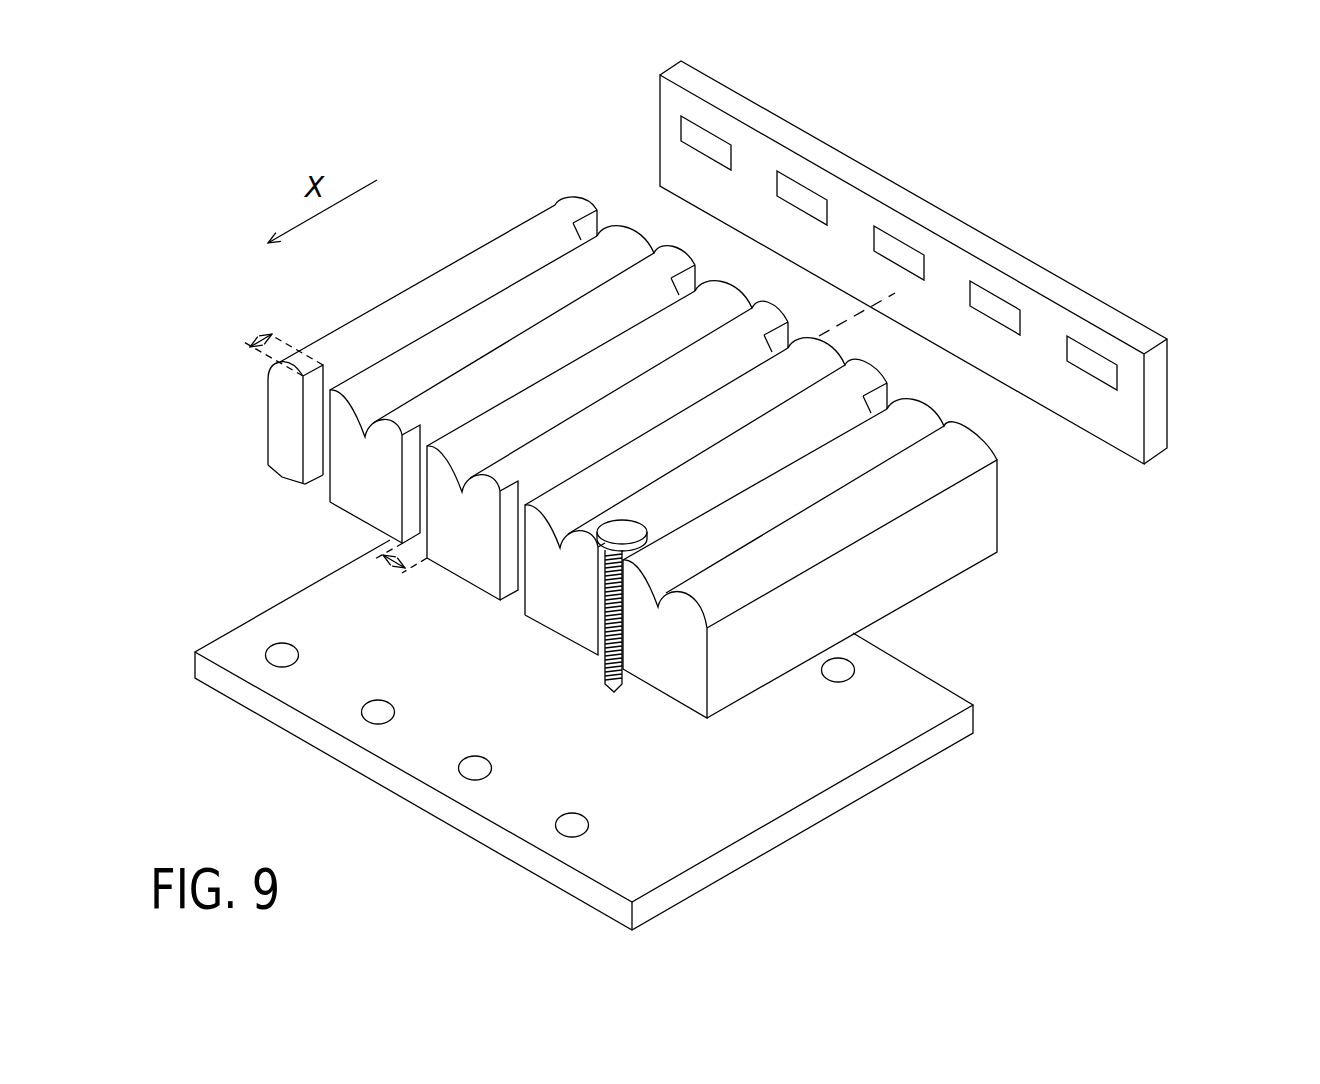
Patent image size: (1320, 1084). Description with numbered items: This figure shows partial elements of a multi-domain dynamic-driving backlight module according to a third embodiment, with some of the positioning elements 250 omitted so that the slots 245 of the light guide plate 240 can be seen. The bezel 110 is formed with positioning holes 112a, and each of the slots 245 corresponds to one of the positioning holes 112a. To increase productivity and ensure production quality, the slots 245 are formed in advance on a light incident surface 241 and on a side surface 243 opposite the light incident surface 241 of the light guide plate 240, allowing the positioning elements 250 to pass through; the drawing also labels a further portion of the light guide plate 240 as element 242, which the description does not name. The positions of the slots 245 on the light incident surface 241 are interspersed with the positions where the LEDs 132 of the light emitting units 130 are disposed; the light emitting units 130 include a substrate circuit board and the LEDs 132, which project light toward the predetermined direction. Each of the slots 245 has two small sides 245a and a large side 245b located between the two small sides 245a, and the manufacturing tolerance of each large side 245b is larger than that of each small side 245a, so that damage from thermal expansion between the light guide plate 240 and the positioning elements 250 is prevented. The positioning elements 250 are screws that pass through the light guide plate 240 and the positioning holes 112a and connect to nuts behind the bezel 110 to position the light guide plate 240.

The bezel 110 is at (880, 815).
The positioning holes 112a is at (383, 712).
The light emitting units 130 is at (1133, 305).
The LEDs 132 is at (997, 312).
The light guide plate 240 is at (955, 605).
The light incident surface 241 is at (1000, 511).
The heat dissipation fins 242 is at (553, 298).
The side surface 243 is at (560, 615).
The slots 245 is at (517, 603).
The small sides 245a is at (305, 487).
The large side 245b is at (325, 493).
The positioning elements 250 is at (612, 683).